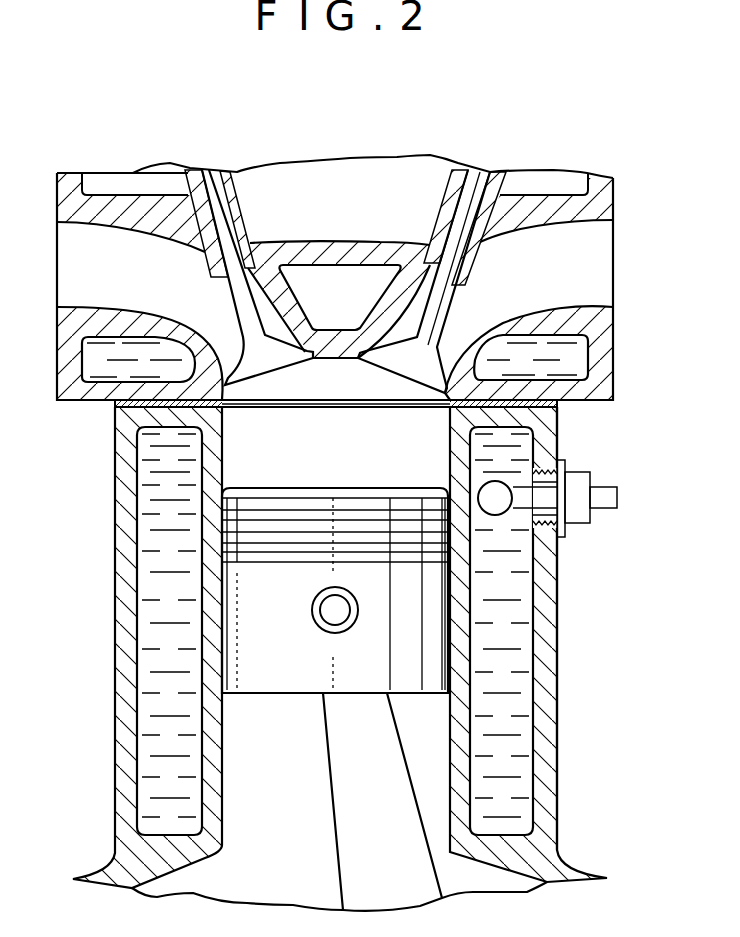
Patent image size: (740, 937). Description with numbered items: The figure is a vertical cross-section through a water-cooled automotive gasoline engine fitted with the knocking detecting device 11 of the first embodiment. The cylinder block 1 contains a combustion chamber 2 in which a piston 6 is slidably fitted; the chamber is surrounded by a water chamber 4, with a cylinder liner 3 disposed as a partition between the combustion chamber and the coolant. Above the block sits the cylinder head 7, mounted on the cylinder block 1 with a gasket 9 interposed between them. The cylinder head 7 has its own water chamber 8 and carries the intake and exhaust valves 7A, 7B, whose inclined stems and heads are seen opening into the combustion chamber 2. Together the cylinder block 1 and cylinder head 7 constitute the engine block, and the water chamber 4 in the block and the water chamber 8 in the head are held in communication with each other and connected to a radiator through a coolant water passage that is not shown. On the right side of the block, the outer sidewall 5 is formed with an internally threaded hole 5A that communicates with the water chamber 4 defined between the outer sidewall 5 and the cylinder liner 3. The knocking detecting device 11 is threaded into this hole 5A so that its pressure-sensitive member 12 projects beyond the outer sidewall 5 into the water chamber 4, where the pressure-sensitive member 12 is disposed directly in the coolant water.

The cylinder block 1 is at (558, 672).
The combustion chamber 2 is at (352, 464).
The cylinder liner 3 is at (457, 463).
The water chamber 4 is at (508, 608).
The outer sidewall 5 is at (547, 582).
The internally threaded hole 5A is at (533, 518).
The piston 6 is at (290, 658).
The cylinder head 7 is at (570, 163).
The intake valve 7A is at (203, 190).
The exhaust valve 7B is at (481, 190).
The water chamber 8 is at (107, 360).
The gasket 9 is at (556, 401).
The knocking detecting device 11 is at (601, 480).
The pressure-sensitive member 12 is at (494, 481).